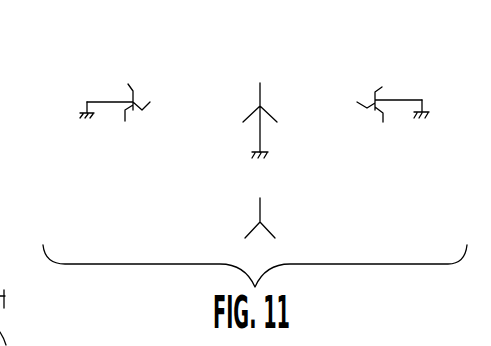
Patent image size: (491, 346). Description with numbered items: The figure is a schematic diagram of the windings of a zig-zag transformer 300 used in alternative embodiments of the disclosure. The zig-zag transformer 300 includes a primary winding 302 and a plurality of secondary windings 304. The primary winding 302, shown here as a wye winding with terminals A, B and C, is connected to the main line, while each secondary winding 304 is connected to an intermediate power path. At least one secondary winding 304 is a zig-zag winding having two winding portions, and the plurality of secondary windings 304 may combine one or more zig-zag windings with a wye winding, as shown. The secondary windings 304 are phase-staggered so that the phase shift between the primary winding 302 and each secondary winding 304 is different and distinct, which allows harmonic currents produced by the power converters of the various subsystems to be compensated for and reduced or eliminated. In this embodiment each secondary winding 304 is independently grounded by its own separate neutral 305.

The zig-zag transformer 300 is at (378, 178).
The primary winding 302 is at (214, 215).
The secondary winding 304 is at (97, 79).
The neutral 305 is at (89, 100).